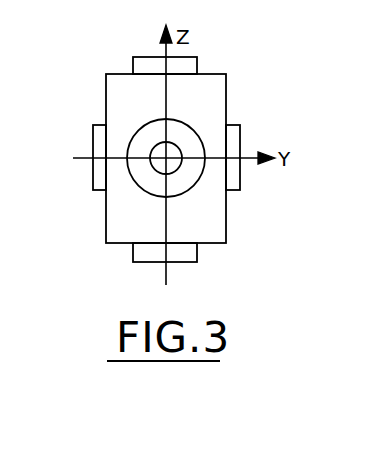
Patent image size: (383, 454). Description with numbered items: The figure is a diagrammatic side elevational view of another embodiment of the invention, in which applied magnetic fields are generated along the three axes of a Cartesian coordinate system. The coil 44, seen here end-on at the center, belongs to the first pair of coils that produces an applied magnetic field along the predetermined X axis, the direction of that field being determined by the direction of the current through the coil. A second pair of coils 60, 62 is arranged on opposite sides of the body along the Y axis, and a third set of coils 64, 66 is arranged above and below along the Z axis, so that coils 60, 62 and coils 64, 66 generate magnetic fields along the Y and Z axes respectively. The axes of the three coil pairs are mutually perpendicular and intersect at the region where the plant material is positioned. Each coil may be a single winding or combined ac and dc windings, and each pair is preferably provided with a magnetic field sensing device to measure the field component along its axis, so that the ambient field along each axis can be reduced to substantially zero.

The coil 44 is at (185, 192).
The coil 60 is at (240, 130).
The coil 62 is at (92, 178).
The coil 64 is at (134, 73).
The coil 66 is at (142, 263).